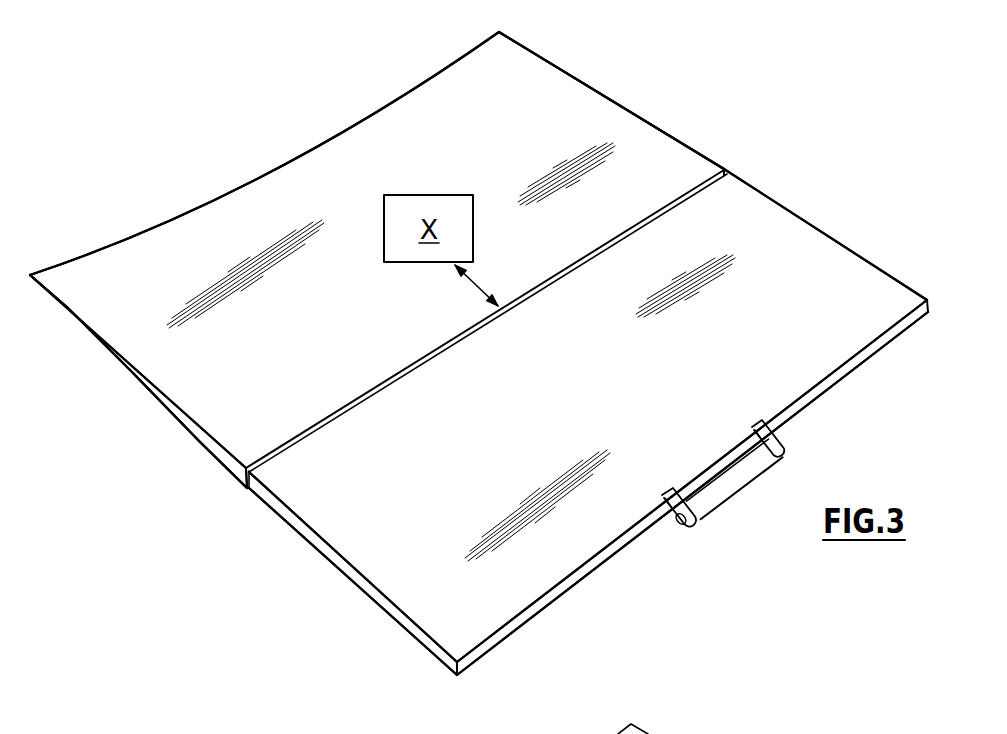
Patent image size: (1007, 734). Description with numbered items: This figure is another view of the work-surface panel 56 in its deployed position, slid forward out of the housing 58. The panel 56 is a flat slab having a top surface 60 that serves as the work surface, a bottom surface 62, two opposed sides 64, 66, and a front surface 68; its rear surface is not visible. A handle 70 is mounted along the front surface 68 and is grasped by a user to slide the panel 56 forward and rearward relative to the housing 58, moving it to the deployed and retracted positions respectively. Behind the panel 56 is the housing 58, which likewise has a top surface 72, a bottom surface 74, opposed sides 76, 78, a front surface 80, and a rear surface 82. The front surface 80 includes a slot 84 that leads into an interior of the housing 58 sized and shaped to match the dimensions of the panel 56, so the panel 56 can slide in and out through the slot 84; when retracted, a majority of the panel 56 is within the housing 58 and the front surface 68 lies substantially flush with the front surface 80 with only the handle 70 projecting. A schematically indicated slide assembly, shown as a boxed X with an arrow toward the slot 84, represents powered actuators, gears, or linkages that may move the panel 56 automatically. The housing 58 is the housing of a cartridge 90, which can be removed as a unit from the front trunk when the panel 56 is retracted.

The panel 56 is at (856, 235).
The housing 58 is at (648, 112).
The top surface 60 is at (851, 280).
The bottom surface 62 is at (849, 391).
The side 64 is at (380, 595).
The side 66 is at (781, 208).
The front surface 68 is at (585, 570).
The handle 70 is at (740, 500).
The top surface 72 is at (530, 97).
The bottom surface 74 is at (207, 466).
The side 76 is at (132, 375).
The side 78 is at (683, 143).
The front surface 80 is at (248, 490).
The rear surface 82 is at (188, 212).
The slot 84 is at (309, 436).
The cartridge 90 is at (600, 65).